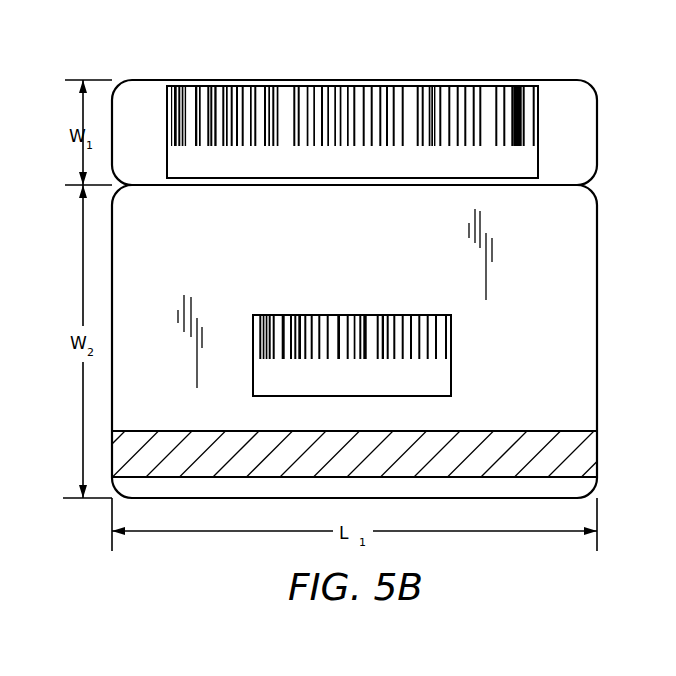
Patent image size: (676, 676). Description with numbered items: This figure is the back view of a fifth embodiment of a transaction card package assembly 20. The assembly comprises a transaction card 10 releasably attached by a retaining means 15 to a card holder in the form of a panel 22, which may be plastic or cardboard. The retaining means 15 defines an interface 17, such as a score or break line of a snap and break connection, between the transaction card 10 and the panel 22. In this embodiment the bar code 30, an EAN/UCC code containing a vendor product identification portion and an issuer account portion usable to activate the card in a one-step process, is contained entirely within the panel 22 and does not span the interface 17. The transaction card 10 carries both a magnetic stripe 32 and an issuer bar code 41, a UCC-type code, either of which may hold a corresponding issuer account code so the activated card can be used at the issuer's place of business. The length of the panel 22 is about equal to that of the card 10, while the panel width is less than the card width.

The transaction card package assembly 20 is at (110, 30).
The panel 22 is at (556, 90).
The bar code 30 is at (540, 115).
The transaction card 10 is at (597, 341).
The retaining means 15 is at (140, 187).
The interface 17 is at (553, 187).
The issuer bar code 41 is at (452, 335).
The magnetic stripe 32 is at (597, 461).